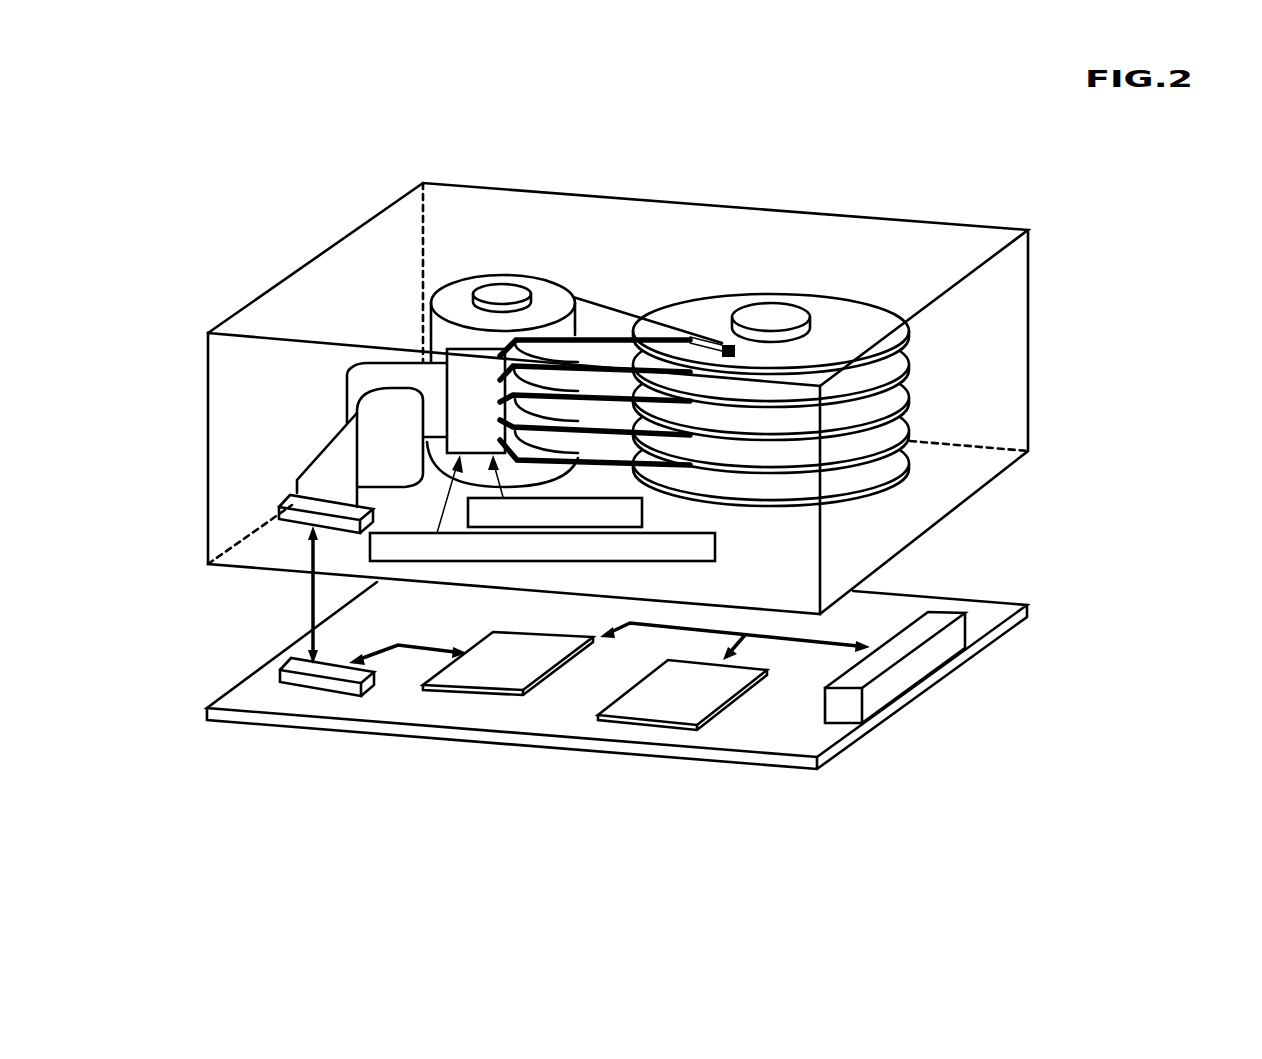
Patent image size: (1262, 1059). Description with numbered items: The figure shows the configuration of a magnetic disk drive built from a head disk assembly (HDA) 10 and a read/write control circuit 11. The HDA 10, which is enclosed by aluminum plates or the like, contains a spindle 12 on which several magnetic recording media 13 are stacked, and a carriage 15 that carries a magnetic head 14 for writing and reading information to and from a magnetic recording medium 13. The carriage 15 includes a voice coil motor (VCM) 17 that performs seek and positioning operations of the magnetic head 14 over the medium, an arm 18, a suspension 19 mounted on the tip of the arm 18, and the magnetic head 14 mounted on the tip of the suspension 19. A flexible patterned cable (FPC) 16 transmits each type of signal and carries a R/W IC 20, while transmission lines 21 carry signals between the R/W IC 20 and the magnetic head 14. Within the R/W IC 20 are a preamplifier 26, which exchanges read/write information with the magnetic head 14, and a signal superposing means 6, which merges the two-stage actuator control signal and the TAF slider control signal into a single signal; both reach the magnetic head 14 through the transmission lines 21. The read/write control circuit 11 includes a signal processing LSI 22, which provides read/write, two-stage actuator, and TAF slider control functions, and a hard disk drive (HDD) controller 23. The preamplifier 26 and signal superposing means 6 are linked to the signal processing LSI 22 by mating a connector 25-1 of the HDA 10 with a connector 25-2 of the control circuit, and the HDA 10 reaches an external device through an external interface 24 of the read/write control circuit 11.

The head disk assembly (HDA) 10 is at (463, 183).
The read/write control circuit 11 is at (755, 757).
The spindle 12 is at (780, 315).
The magnetic recording media 13 is at (867, 323).
The magnetic head 14 is at (724, 344).
The carriage 15 is at (500, 290).
The flexible patterned cable (FPC) 16 is at (372, 458).
The voice coil motor (VCM) 17 is at (447, 297).
The arm 18 is at (620, 311).
The suspension 19 is at (682, 330).
The R/W IC 20 is at (463, 349).
The transmission lines 21 is at (663, 470).
The signal processing LSI 22 is at (460, 682).
The hard disk drive (HDD) controller 23 is at (648, 708).
The external interface 24 is at (877, 696).
The connector 25-1 is at (285, 523).
The connector 25-2 is at (305, 692).
The preamplifier 26 is at (637, 513).
The signal superposing means 6 is at (403, 533).